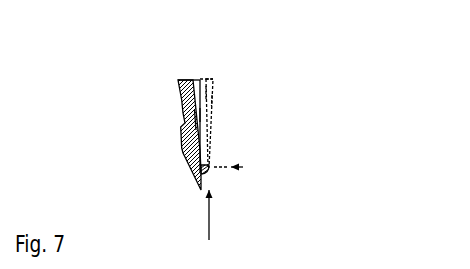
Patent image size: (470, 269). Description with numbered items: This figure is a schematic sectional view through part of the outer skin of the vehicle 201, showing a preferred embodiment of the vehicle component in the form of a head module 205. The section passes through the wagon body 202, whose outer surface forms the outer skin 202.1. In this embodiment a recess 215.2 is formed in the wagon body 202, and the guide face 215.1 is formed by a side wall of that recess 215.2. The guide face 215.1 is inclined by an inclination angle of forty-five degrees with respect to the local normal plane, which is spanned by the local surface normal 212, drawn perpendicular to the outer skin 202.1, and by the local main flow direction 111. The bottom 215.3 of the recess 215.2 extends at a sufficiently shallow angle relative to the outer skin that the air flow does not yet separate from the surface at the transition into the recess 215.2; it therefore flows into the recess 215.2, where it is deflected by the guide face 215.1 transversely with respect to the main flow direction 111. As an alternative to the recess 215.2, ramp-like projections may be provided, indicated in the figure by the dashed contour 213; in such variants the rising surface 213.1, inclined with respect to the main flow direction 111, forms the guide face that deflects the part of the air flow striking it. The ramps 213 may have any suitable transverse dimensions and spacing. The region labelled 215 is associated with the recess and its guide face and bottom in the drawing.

The vehicle 201 is at (292, 52).
The wagon body 202 is at (177, 94).
The outer skin 202.1 is at (208, 179).
The head module 205 is at (220, 58).
The local main flow direction 111 is at (206, 227).
The local surface normal 212 is at (232, 172).
The dashed contour (ramp) 213 is at (214, 112).
The rising surface 213.1 is at (214, 101).
The contact line 215 is at (202, 79).
The guide face 215.1 is at (206, 93).
The recess 215.2 is at (195, 122).
The bottom of the recess 215.3 is at (203, 115).